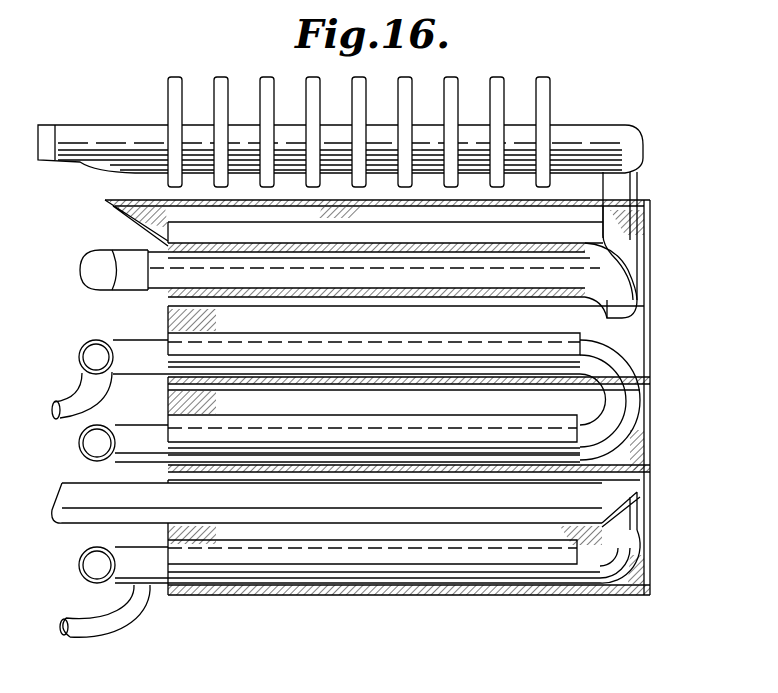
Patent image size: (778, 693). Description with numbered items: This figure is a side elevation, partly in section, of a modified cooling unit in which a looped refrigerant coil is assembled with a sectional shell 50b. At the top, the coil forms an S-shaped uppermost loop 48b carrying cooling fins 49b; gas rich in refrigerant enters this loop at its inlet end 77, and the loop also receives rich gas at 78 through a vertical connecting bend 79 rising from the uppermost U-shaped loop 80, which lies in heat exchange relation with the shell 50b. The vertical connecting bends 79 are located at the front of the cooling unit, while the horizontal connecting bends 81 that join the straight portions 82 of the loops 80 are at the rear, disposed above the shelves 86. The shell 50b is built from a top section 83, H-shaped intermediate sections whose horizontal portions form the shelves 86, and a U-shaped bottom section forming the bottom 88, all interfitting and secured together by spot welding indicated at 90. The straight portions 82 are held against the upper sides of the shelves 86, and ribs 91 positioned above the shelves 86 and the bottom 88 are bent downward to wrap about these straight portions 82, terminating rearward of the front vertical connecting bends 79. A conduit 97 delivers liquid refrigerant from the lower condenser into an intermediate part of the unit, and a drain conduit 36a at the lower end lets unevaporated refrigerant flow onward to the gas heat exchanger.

The inlet end 77 is at (57, 136).
The entry point of uppermost loop 78 is at (600, 175).
The S-shaped uppermost loop 48b is at (242, 118).
The cooling fins 49b is at (505, 78).
The top section 83 is at (107, 200).
The shell 50b is at (656, 345).
The spot welding 90 is at (205, 231).
The straight portions 82 is at (340, 263).
The U-shaped loop 80 is at (138, 292).
The horizontal connecting bends 81 is at (82, 263).
The ribs 91 is at (446, 346).
The conduit 97 is at (85, 397).
The drain conduit 36a is at (115, 640).
The shelves 86 is at (250, 382).
The bottom 88 is at (386, 594).
The vertical connecting bends 79 is at (644, 192).